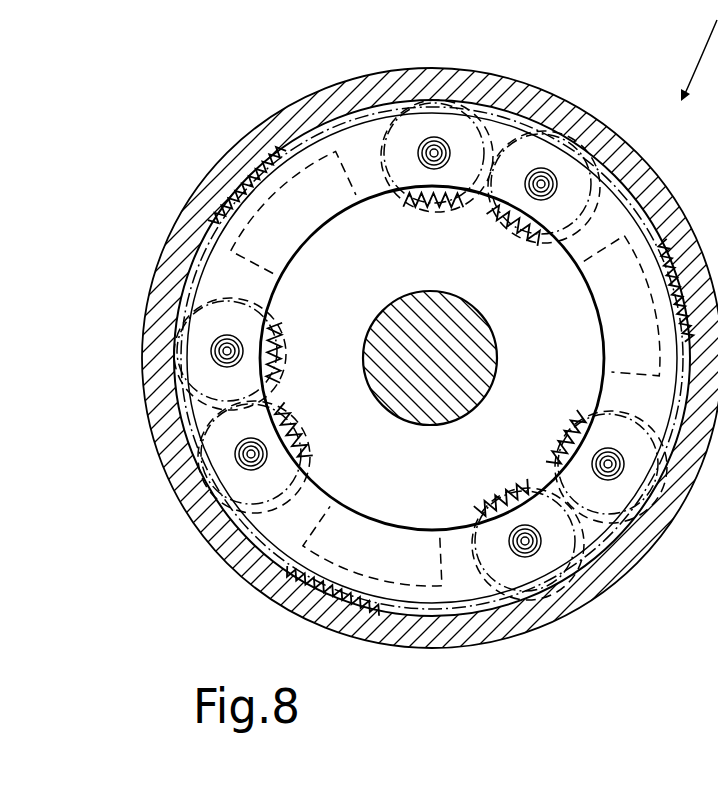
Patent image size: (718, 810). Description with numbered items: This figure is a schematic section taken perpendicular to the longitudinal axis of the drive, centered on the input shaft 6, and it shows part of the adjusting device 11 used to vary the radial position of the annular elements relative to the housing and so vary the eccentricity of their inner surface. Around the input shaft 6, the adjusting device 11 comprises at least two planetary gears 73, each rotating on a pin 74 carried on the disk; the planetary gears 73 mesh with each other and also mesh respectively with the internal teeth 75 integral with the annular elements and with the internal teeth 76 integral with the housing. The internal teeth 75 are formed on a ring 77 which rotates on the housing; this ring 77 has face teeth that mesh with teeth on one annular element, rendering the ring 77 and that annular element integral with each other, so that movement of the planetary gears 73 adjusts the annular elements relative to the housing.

The input shaft 6 is at (424, 378).
The adjusting device 11 is at (356, 146).
The planetary gears 73 is at (437, 132).
The pin 74 is at (300, 428).
The internal teeth 75 is at (266, 160).
The internal teeth 76 is at (441, 357).
The ring 77 is at (183, 495).